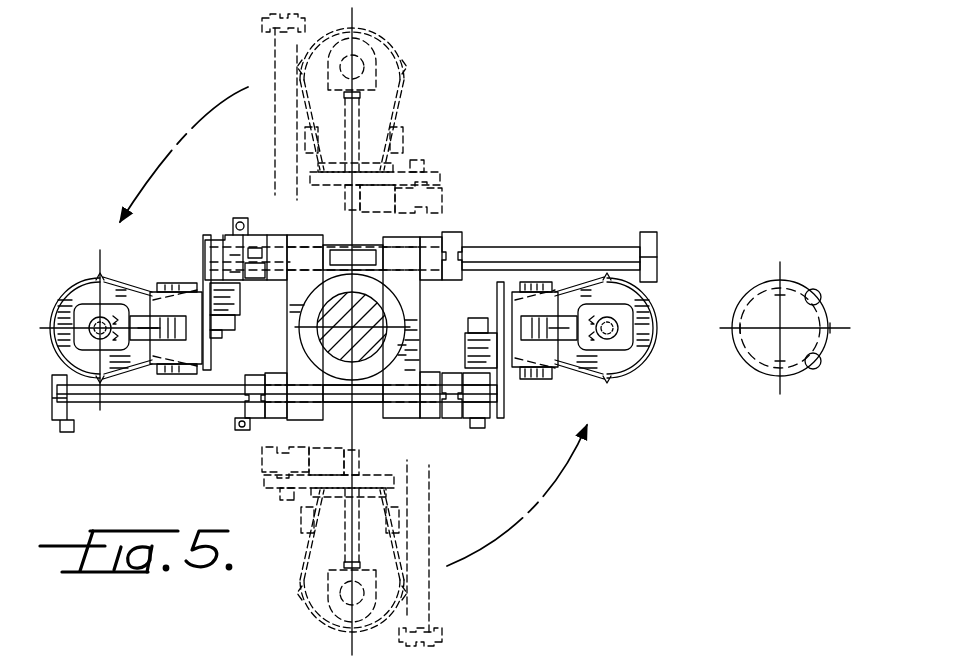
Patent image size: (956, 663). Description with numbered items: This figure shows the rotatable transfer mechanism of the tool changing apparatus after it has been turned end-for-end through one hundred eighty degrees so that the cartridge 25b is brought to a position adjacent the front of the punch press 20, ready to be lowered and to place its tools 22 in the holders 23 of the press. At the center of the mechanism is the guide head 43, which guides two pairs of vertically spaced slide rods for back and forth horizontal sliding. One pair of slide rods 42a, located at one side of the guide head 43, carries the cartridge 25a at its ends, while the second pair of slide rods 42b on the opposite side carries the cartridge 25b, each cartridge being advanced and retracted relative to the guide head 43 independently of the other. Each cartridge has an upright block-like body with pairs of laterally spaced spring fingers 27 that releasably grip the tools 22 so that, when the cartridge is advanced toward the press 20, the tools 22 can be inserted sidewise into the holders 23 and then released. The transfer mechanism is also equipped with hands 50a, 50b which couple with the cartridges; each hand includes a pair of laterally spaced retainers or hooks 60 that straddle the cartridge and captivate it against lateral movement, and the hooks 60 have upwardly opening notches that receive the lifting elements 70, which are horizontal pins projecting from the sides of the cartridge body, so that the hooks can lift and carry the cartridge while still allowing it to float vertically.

The punch press 20 is at (805, 278).
The tools 22 is at (78, 284).
The holders 23 is at (812, 372).
The cartridge 25a is at (155, 298).
The cartridge 25b is at (548, 346).
The spring fingers 27 is at (116, 277).
The slide rods 42a is at (520, 248).
The slide rods 42b is at (198, 403).
The guide head 43 is at (408, 412).
The hand 50a is at (190, 280).
The hand 50b is at (520, 382).
The retainers or hooks 60 is at (195, 372).
The lifting elements 70 is at (537, 285).